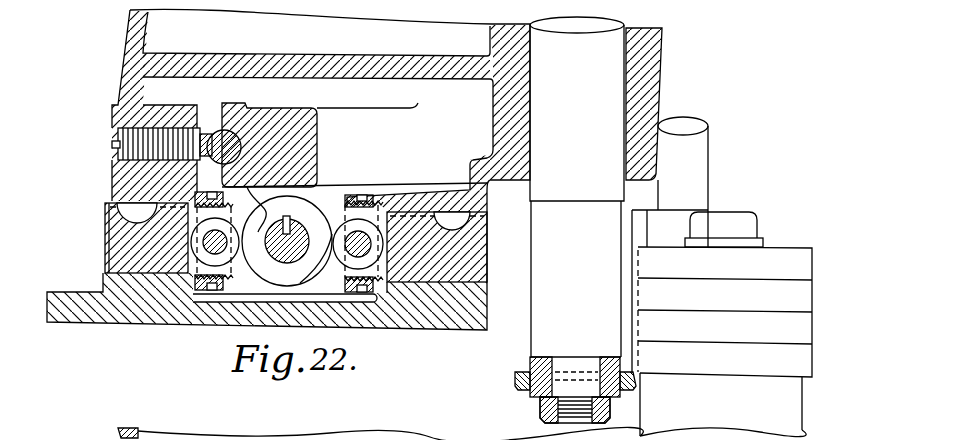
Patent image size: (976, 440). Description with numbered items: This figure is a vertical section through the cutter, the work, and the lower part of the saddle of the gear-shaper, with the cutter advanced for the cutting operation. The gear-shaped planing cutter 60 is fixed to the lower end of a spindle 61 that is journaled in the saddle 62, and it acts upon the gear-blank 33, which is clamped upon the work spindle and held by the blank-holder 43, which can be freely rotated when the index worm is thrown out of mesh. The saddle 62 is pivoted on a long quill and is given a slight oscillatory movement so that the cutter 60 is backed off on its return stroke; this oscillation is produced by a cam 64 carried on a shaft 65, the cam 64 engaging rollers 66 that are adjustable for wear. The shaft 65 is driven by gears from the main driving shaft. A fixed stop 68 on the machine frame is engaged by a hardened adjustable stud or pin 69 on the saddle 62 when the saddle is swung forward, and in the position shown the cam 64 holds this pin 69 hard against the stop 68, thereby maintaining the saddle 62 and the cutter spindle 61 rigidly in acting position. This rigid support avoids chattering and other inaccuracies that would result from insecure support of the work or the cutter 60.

The saddle 62 is at (120, 87).
The adjustable stud or pin 69 is at (200, 128).
The fixed stop 68 is at (241, 141).
The cam 64 is at (250, 191).
The shaft 65 is at (272, 262).
The rollers 66 is at (182, 287).
The spindle 61 is at (603, 108).
The blank-holder 43 is at (757, 223).
The gear-blank 33 is at (797, 259).
The gear-shaped planing cutter 60 is at (516, 378).